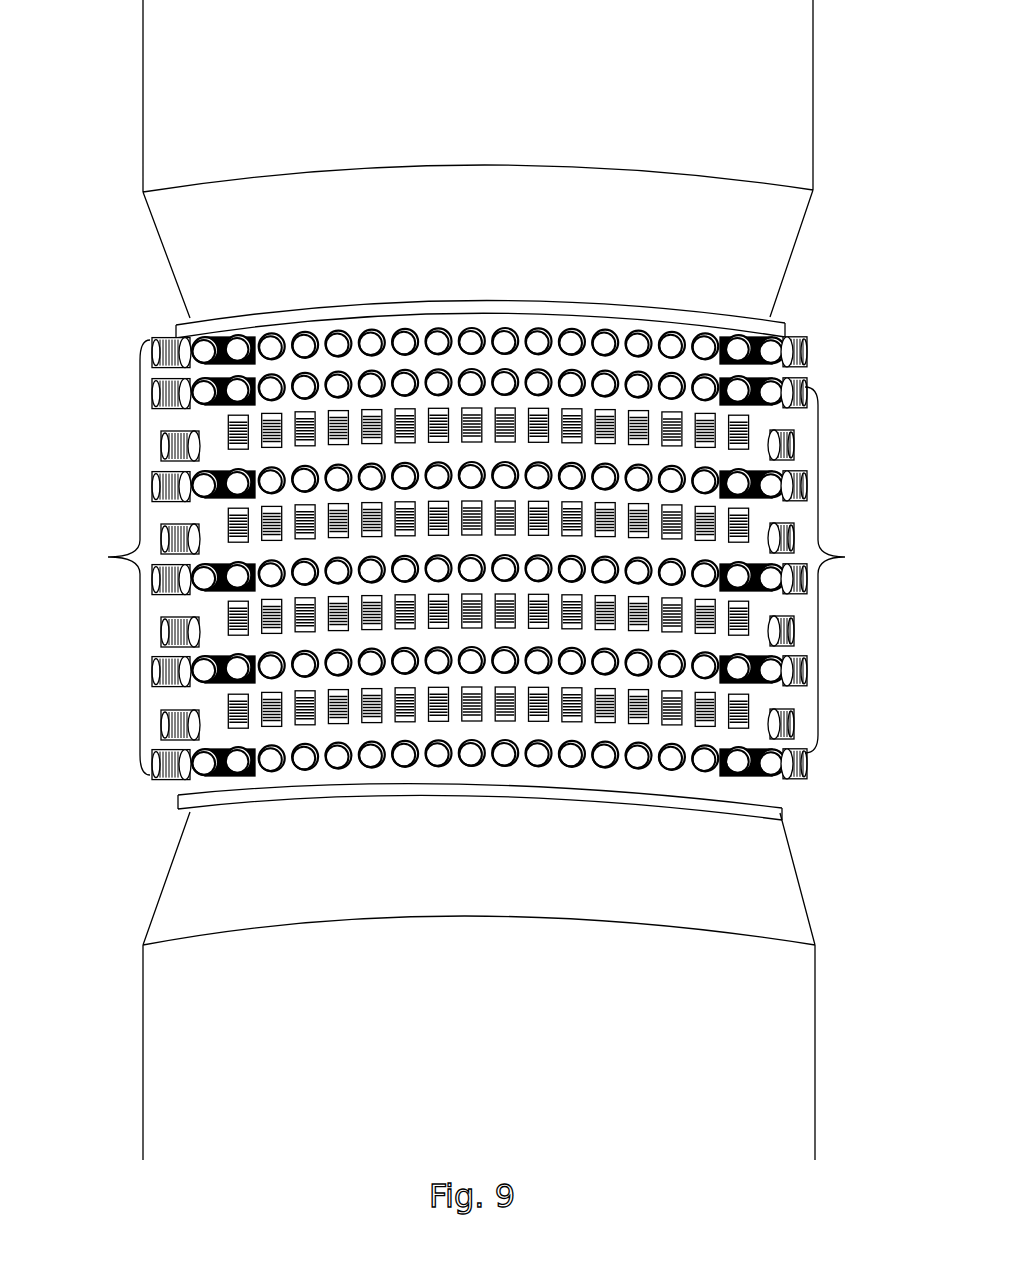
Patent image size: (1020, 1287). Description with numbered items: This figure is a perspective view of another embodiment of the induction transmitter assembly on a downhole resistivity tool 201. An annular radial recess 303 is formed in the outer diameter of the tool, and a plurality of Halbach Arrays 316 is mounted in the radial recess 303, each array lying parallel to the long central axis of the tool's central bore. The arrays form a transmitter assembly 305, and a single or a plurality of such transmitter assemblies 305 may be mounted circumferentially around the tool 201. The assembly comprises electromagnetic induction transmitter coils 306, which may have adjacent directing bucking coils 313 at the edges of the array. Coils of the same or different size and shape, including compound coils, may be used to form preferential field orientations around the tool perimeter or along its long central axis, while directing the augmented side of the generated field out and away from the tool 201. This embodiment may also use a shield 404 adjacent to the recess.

The resistivity tool 201 is at (143, 101).
The radial recess 303 is at (512, 852).
The transmitter assembly 305 is at (104, 557).
The electromagnetic induction transmitter coils 306 is at (854, 570).
The directing bucking coils 313 is at (818, 368).
The Halbach Arrays 316 is at (372, 352).
The shield 404 is at (286, 781).